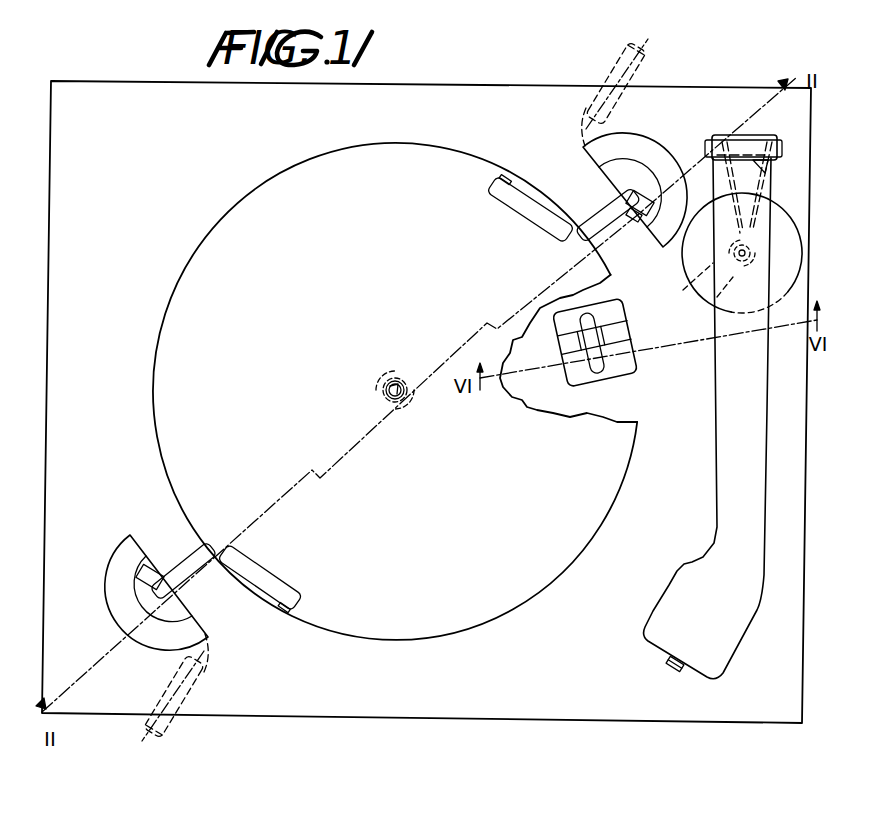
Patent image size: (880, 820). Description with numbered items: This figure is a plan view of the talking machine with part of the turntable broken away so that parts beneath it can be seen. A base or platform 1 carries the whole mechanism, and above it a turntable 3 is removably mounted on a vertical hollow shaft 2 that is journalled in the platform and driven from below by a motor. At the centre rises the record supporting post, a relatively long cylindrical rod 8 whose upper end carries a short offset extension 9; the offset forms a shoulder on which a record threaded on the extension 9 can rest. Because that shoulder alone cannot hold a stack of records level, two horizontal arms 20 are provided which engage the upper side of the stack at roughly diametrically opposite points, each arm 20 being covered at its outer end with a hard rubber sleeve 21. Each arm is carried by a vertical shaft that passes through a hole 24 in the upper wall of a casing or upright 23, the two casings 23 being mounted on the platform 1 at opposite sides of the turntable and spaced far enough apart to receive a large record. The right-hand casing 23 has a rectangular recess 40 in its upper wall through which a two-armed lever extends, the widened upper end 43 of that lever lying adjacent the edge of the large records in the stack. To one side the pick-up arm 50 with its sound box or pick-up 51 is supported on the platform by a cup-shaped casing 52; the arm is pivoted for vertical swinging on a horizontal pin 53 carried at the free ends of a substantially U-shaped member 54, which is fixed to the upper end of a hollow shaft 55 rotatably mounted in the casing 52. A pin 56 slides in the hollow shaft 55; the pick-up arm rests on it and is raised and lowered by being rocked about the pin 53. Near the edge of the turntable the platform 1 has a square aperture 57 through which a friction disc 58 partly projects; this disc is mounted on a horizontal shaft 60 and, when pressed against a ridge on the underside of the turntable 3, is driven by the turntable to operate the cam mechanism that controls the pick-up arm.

The base or platform 1 is at (557, 697).
The vertical hollow shaft 2 is at (377, 363).
The turntable 3 is at (255, 203).
The cylindrical rod (supporting post) 8 is at (398, 382).
The extension 9 is at (395, 400).
The arm 20 is at (592, 227).
The hard rubber sleeve 21 is at (510, 190).
The casing or upright 23 is at (648, 147).
The hole 24 is at (627, 200).
The rectangular recess 40 is at (644, 214).
The upper end of lever 43 is at (631, 222).
The pick-up arm 50 is at (727, 461).
The sound box or pick-up 51 is at (712, 660).
The cup-shaped casing 52 is at (778, 293).
The horizontal pin 53 is at (740, 135).
The U-shaped member 54 is at (755, 157).
The hollow shaft 55 is at (712, 264).
The pin 56 is at (708, 306).
The square aperture 57 is at (605, 380).
The friction disc 58 is at (566, 343).
The horizontal shaft 60 is at (621, 337).